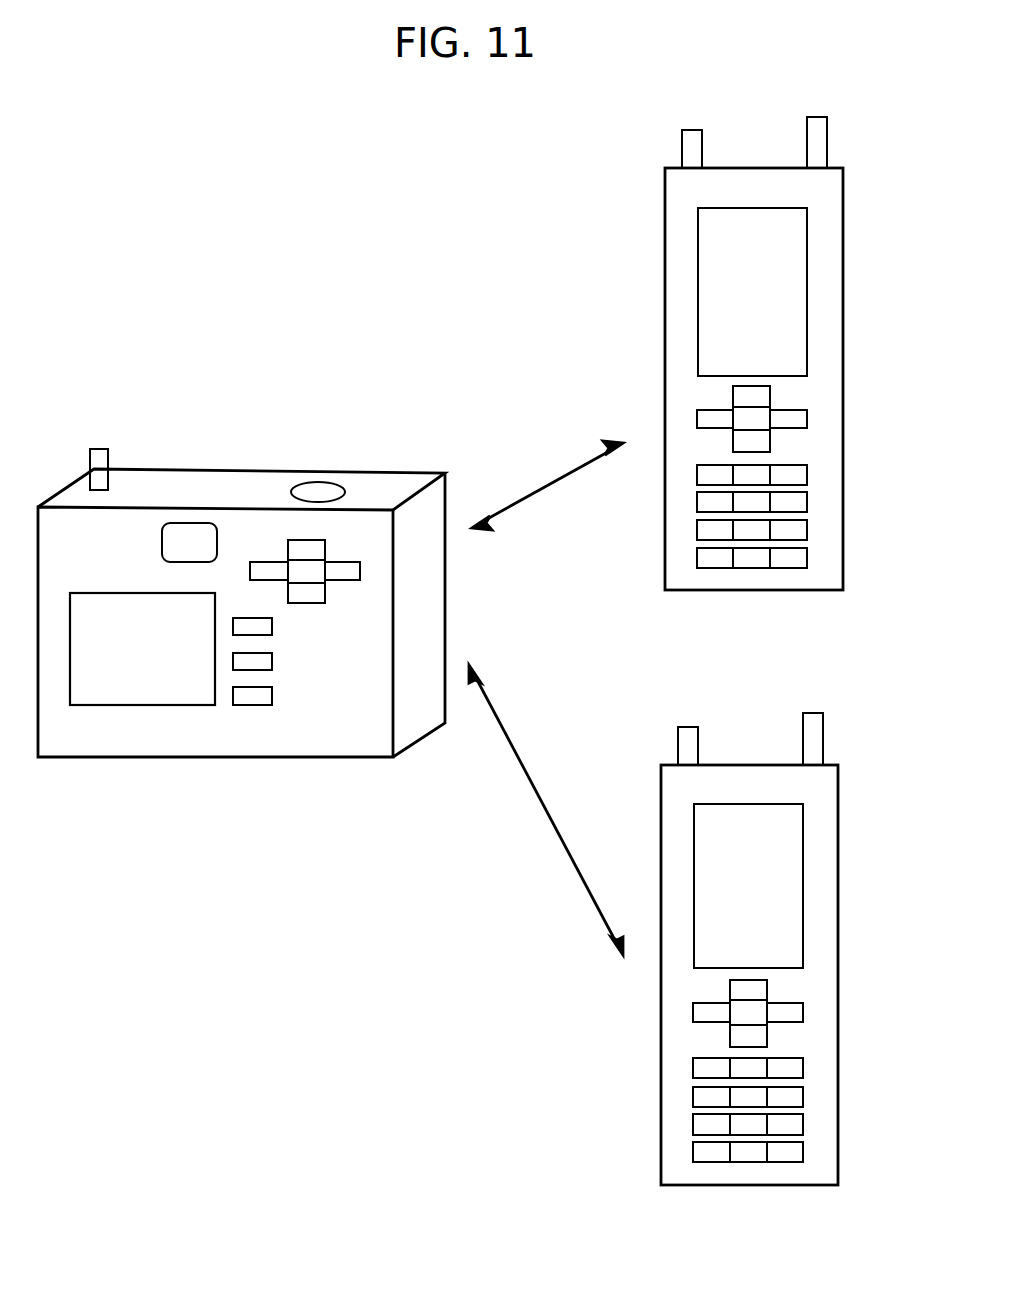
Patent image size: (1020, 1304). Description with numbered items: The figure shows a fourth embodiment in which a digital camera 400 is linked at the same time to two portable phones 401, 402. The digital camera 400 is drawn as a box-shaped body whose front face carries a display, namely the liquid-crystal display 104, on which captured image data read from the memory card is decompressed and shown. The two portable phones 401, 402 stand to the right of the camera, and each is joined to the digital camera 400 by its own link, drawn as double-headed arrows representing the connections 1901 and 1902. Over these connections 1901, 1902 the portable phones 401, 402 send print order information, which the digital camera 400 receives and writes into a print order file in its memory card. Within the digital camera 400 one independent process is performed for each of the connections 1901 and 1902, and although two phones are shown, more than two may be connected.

The digital camera 400 is at (385, 472).
The liquid-crystal display (LCD) 104 is at (98, 593).
The portable phone 401 is at (843, 208).
The portable phone 402 is at (840, 805).
The connection 1901 is at (542, 488).
The connection 1902 is at (520, 757).